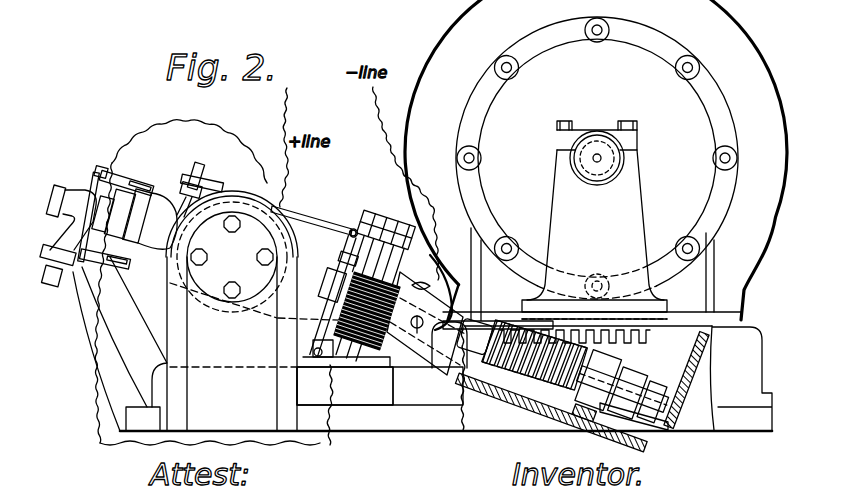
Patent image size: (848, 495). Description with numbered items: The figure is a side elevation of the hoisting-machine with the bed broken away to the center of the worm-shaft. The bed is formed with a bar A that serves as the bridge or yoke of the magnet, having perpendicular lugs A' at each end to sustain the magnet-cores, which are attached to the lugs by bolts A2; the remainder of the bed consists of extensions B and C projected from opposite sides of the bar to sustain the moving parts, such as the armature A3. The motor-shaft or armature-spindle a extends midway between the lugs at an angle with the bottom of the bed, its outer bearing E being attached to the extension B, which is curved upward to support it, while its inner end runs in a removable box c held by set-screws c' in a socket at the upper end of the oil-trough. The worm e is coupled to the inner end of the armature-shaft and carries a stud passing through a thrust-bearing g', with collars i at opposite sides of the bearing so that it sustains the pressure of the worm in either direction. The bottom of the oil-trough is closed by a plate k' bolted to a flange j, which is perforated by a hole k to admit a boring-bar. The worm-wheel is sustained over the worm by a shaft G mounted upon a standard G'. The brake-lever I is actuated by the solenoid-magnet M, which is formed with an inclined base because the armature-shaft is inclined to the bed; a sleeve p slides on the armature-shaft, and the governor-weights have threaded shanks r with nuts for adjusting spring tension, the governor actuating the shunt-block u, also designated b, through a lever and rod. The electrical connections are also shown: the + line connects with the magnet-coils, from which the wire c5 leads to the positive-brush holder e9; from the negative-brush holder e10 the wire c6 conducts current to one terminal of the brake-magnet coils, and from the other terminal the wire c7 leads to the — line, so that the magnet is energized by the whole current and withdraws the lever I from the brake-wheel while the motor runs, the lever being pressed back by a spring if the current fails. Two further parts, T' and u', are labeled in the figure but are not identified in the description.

The fly wheel T' is at (596, 161).
The shaft G is at (597, 138).
The standard G' is at (594, 231).
The shaft u' is at (630, 164).
The extension C is at (446, 371).
The solenoid-magnet M is at (345, 386).
The worm e is at (575, 333).
The thrust-bearing g' is at (553, 350).
The collars i is at (623, 389).
The flange j is at (683, 359).
The hole k is at (580, 407).
The plate k' is at (652, 416).
The removable box c is at (425, 315).
The set-screws c' is at (372, 331).
The wire c5 is at (226, 129).
The wire c6 is at (96, 405).
The wire c7 is at (413, 182).
The brake-lever I is at (367, 281).
The shunt-block u is at (332, 291).
The armature-spindle a is at (342, 254).
The sleeve p is at (318, 335).
The threaded shanks r is at (313, 217).
The bar A is at (232, 344).
The bolts A2 is at (232, 251).
The lugs A' is at (140, 332).
The armature A3 is at (167, 191).
The extension B is at (83, 320).
The outer bearing E is at (72, 191).
The positive-brush holder e9 is at (132, 171).
The negative-brush holder e10 is at (110, 269).
The shunt-block b is at (204, 168).